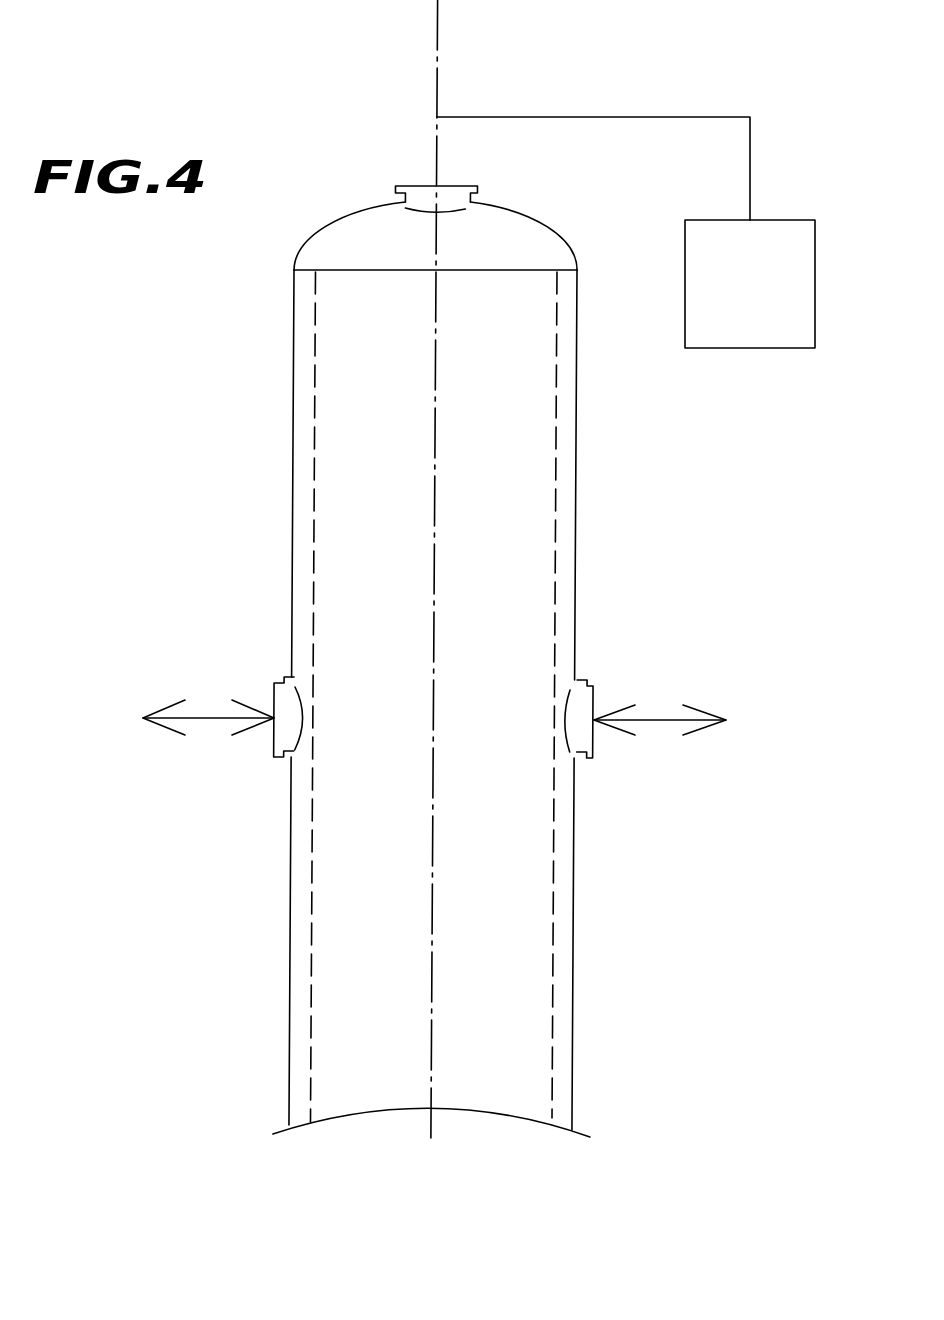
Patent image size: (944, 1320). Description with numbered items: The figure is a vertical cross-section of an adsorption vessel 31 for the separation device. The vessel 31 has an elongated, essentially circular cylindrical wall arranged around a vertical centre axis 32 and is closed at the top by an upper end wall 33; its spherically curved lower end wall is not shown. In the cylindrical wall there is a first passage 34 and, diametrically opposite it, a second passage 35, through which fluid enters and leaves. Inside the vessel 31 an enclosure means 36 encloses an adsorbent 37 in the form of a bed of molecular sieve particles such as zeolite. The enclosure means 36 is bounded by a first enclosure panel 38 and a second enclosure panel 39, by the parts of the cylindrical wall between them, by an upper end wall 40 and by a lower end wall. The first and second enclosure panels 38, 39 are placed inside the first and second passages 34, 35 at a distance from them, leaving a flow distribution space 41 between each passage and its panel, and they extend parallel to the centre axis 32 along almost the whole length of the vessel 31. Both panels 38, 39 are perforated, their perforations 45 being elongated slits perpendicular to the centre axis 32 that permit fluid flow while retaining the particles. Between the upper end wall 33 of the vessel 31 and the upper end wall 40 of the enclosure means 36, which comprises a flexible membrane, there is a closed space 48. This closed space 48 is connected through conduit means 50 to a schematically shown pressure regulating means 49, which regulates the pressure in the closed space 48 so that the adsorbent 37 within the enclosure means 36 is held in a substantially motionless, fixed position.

The vessel 31 is at (294, 440).
The centre axis 32 is at (435, 357).
The upper end wall 33 is at (323, 228).
The first passage 34 is at (595, 692).
The second passage 35 is at (278, 693).
The enclosure means 36 is at (472, 274).
The adsorbent 37 is at (500, 697).
The first enclosure panel 38 is at (557, 508).
The second enclosure panel 39 is at (313, 560).
The upper end wall of the enclosure means 40 is at (506, 228).
The flow distribution space 41 is at (303, 498).
The perforations 45 is at (312, 928).
The closed space 48 is at (393, 260).
The pressure regulating means 49 is at (790, 235).
The conduit means 50 is at (600, 117).